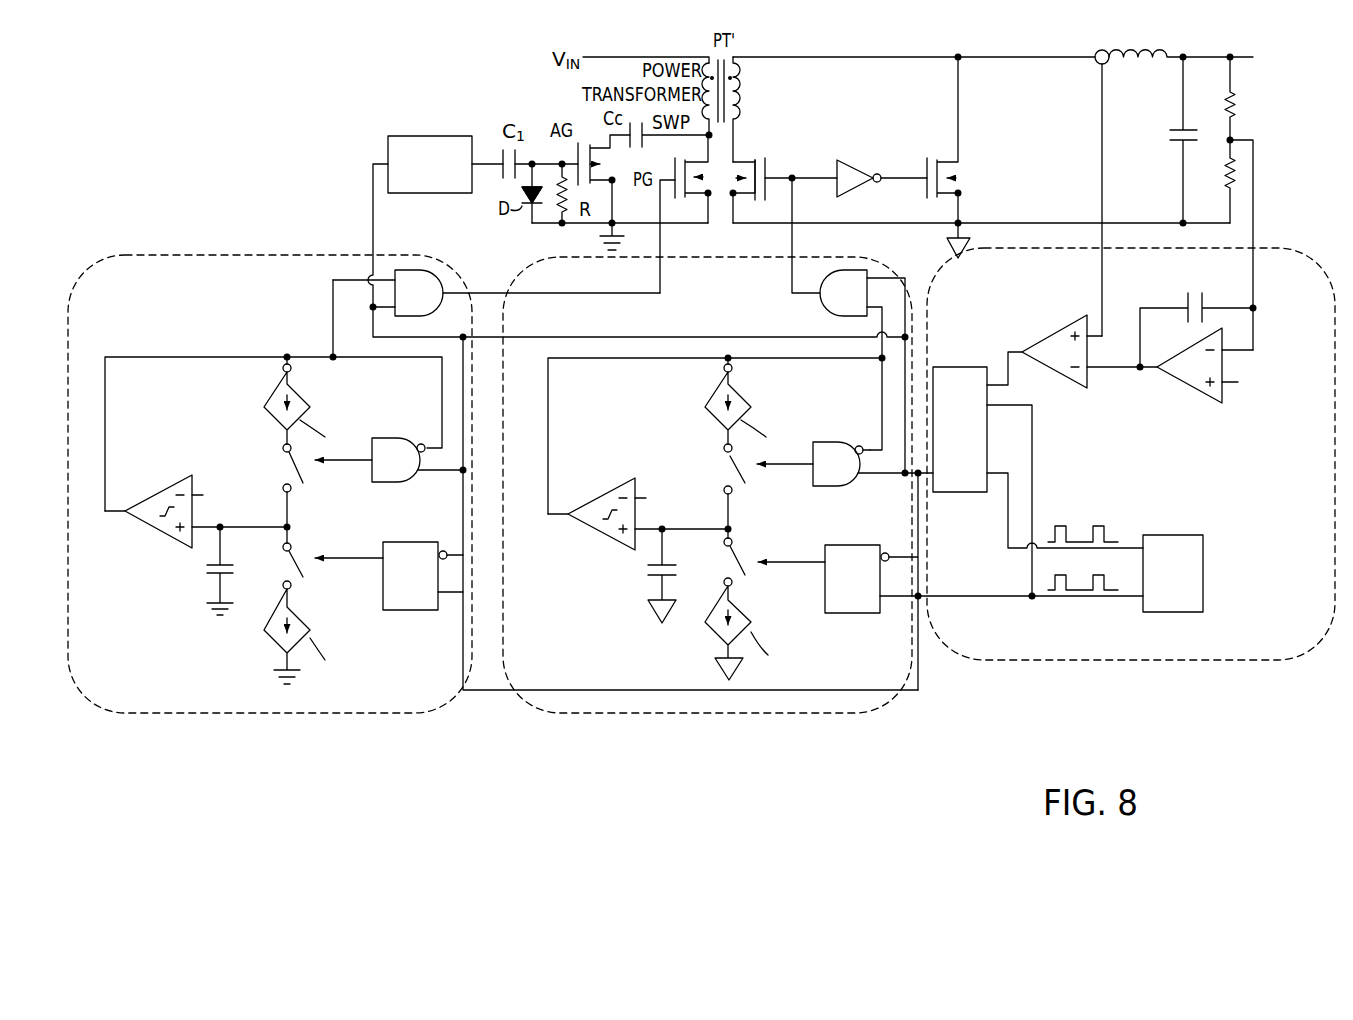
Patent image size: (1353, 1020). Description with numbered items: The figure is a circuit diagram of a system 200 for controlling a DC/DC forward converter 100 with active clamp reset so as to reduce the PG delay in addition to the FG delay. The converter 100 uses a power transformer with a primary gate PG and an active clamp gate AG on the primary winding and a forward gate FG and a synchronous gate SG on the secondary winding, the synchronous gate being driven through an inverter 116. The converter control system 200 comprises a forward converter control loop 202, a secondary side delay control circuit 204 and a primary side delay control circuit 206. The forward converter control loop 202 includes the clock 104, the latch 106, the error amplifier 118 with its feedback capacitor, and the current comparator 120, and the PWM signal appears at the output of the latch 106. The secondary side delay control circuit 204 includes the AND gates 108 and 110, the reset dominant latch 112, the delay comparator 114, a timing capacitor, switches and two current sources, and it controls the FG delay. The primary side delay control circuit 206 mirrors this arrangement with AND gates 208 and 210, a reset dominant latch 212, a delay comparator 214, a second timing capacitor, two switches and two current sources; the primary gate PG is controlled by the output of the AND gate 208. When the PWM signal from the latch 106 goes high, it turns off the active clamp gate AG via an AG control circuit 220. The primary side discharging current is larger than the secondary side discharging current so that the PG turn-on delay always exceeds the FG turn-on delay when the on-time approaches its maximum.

The converter control system 200 is at (246, 108).
The AG control circuit 220 is at (430, 136).
The AND gate 208 is at (434, 271).
The AND gate 210 is at (396, 438).
The reset dominant latch 212 is at (412, 542).
The delay comparator 214 is at (162, 490).
The primary side delay control circuit 206 is at (247, 714).
The secondary side delay control circuit 204 is at (688, 714).
The forward converter control loop 202 is at (1100, 662).
The AND gate 108 is at (820, 309).
The AND gate 110 is at (838, 442).
The reset dominant latch 112 is at (855, 545).
The delay comparator 114 is at (606, 492).
The inverter 116 is at (853, 160).
The error amplifier 118 is at (1217, 403).
The current comparator 120 is at (1072, 383).
The latch 106 is at (958, 493).
The clock 104 is at (1205, 568).
The DC/DC forward converter 100 is at (1032, 116).